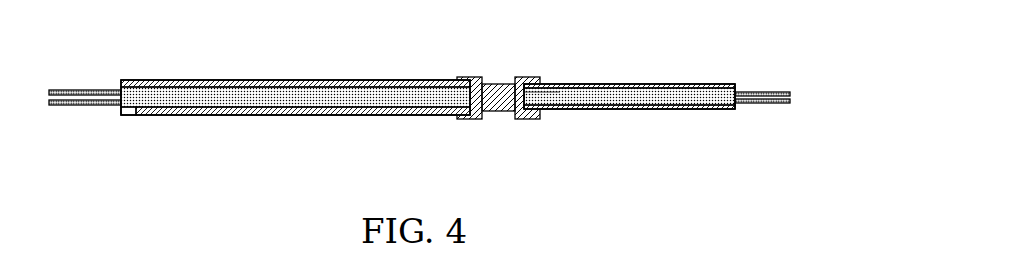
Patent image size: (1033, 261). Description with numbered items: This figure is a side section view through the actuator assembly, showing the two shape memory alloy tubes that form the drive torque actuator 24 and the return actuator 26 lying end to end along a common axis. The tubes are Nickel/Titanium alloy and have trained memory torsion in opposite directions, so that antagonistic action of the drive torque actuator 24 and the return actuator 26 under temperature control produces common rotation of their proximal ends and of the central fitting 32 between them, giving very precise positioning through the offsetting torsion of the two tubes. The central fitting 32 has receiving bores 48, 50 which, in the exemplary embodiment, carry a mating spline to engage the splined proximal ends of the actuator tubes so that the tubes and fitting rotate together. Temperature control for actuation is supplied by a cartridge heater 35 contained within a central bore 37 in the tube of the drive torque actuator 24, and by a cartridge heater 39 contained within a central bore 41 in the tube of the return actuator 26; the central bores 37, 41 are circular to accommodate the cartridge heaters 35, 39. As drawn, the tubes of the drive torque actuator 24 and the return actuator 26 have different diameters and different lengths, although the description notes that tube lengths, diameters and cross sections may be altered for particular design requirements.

The drive torque actuator 24 is at (350, 82).
The return actuator 26 is at (640, 111).
The central fitting 32 is at (532, 120).
The cartridge heater 35 is at (392, 112).
The central bore 37 is at (143, 103).
The cartridge heater 39 is at (650, 87).
The central bore 41 is at (688, 105).
The receiving bore 48 is at (471, 82).
The receiving bore 50 is at (527, 88).